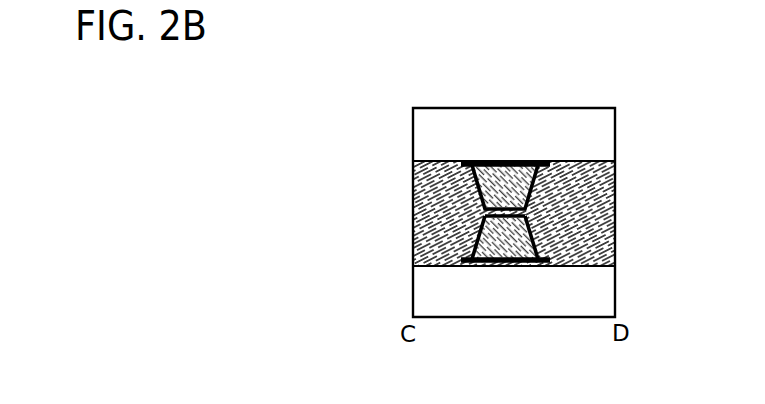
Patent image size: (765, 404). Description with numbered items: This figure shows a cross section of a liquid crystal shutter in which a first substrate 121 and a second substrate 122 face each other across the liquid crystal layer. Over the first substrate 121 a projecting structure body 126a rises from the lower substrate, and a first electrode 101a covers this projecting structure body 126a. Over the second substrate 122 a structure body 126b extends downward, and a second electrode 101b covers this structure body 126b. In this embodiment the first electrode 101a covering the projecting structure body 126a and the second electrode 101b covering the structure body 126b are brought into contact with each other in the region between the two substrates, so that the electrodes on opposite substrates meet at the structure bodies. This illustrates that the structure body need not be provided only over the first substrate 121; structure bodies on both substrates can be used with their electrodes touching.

The first substrate 121 is at (568, 292).
The second substrate 122 is at (432, 123).
The first electrode 101a is at (478, 258).
The second electrode 101b is at (447, 160).
The projecting structure body 126a is at (503, 258).
The structure body 126b is at (505, 183).